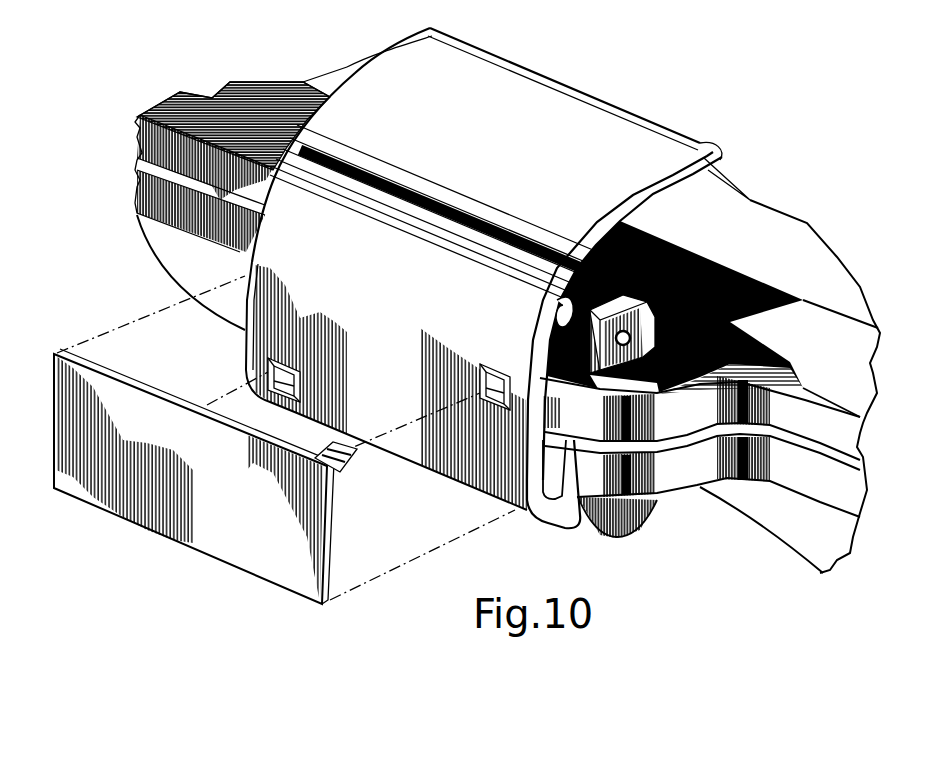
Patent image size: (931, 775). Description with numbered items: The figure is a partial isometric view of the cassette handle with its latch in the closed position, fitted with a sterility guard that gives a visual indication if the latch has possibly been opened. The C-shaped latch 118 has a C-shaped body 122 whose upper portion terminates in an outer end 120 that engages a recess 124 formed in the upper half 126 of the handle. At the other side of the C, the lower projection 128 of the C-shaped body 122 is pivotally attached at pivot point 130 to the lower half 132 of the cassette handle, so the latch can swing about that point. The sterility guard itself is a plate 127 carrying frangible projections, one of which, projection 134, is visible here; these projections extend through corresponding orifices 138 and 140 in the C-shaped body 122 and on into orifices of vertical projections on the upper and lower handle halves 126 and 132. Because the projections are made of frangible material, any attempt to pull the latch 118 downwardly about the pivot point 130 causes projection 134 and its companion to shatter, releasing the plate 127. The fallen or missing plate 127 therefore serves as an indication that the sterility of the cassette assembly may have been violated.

The C-shaped latch 118 is at (531, 119).
The outer end 120 is at (560, 296).
The C-shaped body 122 is at (410, 393).
The recess 124 is at (533, 340).
The upper half 126 is at (648, 231).
The plate 127 is at (232, 493).
The lower projection 128 is at (567, 503).
The pivot point 130 is at (627, 517).
The lower half 132 is at (225, 330).
The projection 134 is at (338, 466).
The orifice 138 is at (482, 393).
The orifice 140 is at (266, 380).